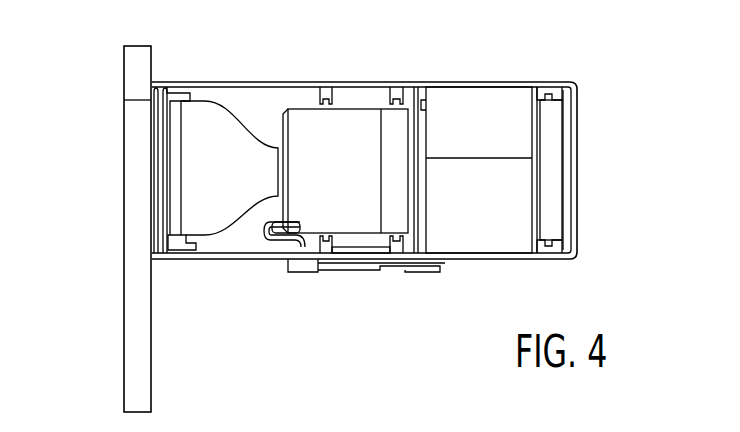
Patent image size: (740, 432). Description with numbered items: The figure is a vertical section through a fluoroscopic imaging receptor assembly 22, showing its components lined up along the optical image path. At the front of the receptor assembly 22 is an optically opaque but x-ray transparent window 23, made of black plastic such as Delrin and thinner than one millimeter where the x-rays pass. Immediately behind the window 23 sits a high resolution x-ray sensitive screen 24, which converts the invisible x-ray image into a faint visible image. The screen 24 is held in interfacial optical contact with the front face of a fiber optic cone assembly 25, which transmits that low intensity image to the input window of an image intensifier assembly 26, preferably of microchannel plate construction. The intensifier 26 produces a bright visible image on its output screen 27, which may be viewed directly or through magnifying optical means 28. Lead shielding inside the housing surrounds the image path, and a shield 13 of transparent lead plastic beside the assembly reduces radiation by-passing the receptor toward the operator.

The shield 13 is at (130, 72).
The fluoroscopic imaging receptor assembly 22 is at (470, 82).
The window 23 is at (155, 235).
The x-ray sensitive screen 24 is at (157, 253).
The fiber optic cone assembly 25 is at (220, 210).
The image intensifier assembly 26 is at (316, 123).
The output screen 27 is at (428, 168).
The magnifying optical means 28 is at (552, 128).